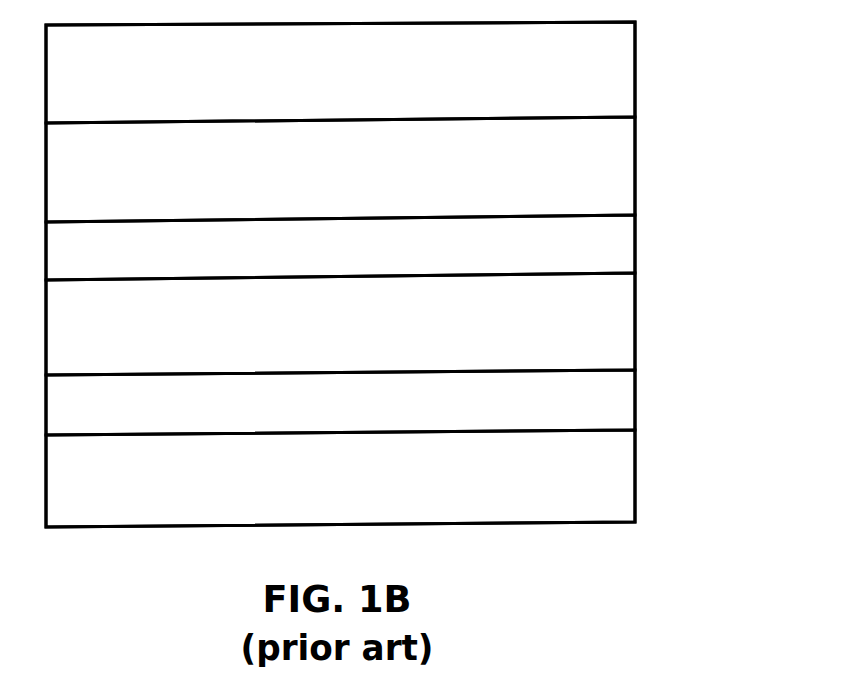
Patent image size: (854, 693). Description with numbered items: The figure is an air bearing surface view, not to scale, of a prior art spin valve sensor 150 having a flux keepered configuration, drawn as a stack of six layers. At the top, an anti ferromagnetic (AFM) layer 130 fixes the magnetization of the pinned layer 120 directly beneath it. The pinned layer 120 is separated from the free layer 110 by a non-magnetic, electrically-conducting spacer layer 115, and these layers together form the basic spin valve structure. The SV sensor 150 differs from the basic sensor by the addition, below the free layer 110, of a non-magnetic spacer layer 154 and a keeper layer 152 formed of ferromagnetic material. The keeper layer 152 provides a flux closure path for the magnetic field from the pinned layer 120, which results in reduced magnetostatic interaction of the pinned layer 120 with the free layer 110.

The SV sensor 150 is at (600, 568).
The anti ferromagnetic (AFM) layer 130 is at (607, 105).
The pinned layer 120 is at (607, 184).
The spacer layer 115 is at (607, 254).
The free layer 110 is at (607, 340).
The spacer layer 154 is at (607, 405).
The keeper layer 152 is at (607, 500).